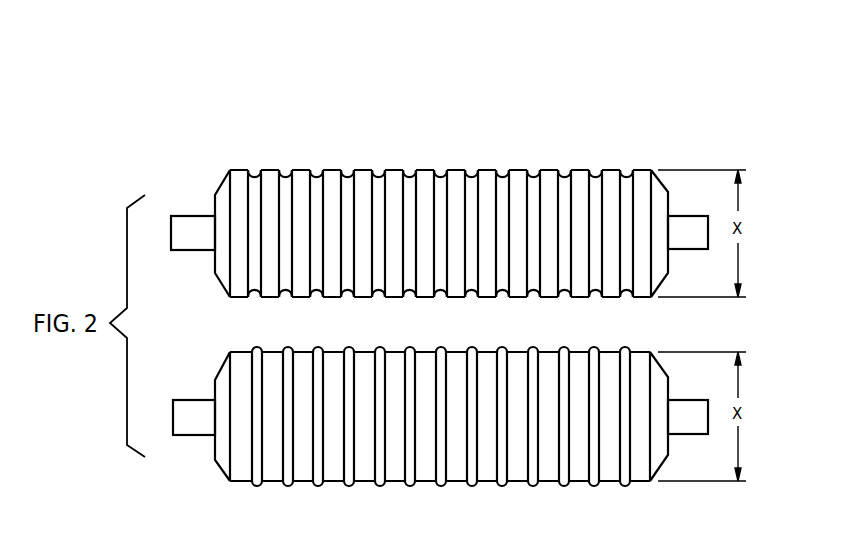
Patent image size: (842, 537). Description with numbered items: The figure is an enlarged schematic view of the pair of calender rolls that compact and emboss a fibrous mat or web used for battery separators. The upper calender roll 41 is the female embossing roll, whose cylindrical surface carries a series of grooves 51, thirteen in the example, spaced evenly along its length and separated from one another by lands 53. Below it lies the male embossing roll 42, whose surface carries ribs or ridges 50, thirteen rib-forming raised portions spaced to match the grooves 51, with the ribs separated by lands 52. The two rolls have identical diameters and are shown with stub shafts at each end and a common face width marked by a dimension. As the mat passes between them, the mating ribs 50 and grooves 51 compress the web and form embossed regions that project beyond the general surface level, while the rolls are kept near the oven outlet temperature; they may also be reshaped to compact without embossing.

The calender roll 41 is at (641, 168).
The male embossing roll 42 is at (637, 352).
The ribs or ridges 50 is at (353, 349).
The grooves 51 is at (348, 172).
The lands 52 is at (483, 352).
The lands 53 is at (423, 168).